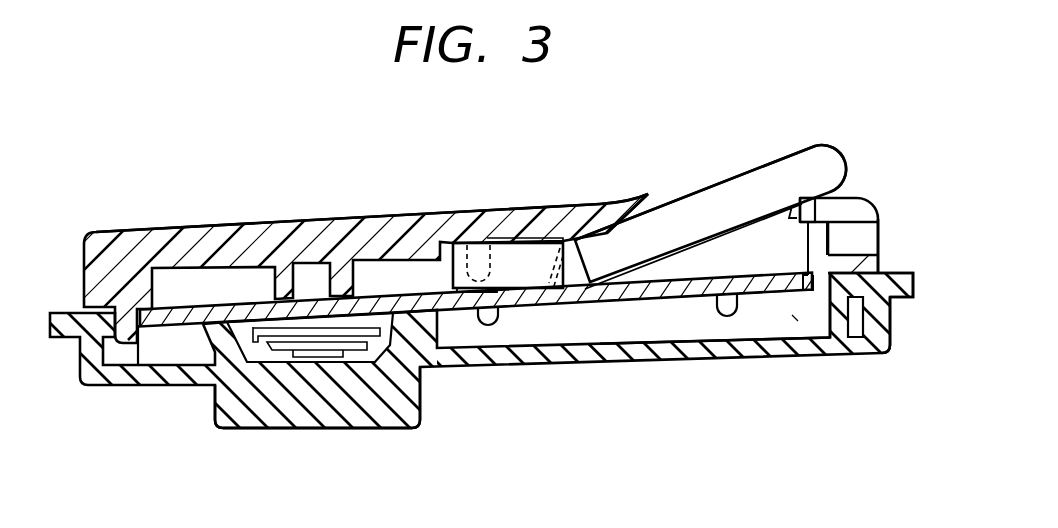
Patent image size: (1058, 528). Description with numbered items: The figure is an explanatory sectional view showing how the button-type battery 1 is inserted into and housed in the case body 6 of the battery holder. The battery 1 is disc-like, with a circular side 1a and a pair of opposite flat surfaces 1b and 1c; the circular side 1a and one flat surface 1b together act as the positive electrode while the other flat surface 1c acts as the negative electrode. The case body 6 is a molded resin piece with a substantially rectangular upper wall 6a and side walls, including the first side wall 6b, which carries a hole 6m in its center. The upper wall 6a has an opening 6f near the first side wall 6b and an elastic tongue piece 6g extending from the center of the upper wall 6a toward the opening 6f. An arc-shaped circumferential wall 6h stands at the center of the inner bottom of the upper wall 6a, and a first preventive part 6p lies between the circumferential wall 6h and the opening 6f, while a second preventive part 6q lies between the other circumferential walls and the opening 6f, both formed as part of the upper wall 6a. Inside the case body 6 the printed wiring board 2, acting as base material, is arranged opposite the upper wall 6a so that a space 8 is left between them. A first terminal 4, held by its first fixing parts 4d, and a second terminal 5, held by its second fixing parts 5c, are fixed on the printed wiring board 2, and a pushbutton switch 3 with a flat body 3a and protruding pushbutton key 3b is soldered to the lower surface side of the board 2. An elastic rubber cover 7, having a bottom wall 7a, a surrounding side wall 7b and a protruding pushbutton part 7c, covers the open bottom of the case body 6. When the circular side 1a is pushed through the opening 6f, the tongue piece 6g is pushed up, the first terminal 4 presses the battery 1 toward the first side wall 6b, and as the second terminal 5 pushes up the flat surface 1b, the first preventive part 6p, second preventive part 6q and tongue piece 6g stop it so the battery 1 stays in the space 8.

The button-type battery 1 is at (762, 167).
The circular side 1a is at (828, 152).
The flat surface 1b is at (713, 188).
The flat surface 1c is at (697, 250).
The printed wiring board 2 is at (551, 304).
The pushbutton switch 3 is at (420, 418).
The body 3a is at (252, 335).
The pushbutton key 3b is at (350, 345).
The first terminal 4 is at (505, 248).
The first fixing parts 4d is at (487, 328).
The second terminal 5 is at (642, 330).
The second fixing parts 5c is at (730, 330).
The case body 6 is at (374, 218).
The upper wall 6a is at (323, 219).
The first side wall 6b is at (890, 268).
The opening 6f is at (791, 220).
The tongue piece 6g is at (610, 205).
The circumferential wall 6h is at (467, 270).
The hole 6m is at (870, 232).
The first preventive part 6p is at (533, 217).
The second preventive part 6q is at (823, 197).
The elastic cover 7 is at (683, 361).
The bottom wall 7a is at (782, 341).
The side wall 7b is at (893, 322).
The pushbutton part 7c is at (295, 430).
The space 8 is at (795, 318).